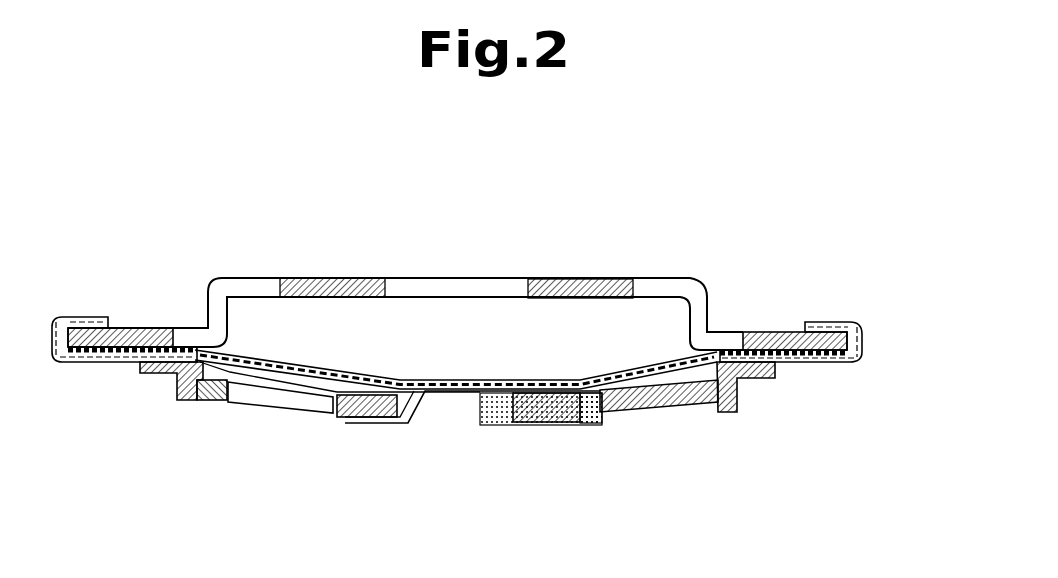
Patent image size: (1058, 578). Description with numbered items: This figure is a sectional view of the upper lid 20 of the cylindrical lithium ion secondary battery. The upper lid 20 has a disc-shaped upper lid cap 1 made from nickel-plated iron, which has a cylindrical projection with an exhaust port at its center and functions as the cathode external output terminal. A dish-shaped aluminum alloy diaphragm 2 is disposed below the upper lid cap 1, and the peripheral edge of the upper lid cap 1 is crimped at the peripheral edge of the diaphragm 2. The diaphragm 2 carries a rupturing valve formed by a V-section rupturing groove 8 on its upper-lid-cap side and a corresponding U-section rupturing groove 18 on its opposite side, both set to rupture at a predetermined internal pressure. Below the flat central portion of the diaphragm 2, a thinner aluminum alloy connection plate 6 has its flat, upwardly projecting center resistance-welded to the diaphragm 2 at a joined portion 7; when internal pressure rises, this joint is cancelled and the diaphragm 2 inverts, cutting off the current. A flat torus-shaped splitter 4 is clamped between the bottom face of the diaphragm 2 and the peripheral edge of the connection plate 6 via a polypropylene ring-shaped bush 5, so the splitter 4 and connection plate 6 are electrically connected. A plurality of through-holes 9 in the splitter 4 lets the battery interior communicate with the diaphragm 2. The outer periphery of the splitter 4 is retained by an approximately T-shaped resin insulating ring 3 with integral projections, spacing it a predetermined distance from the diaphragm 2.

The upper lid 20 is at (453, 252).
The upper lid cap 1 is at (760, 331).
The diaphragm 2 is at (860, 325).
The rupturing groove 8 is at (578, 377).
The insulating ring 3 is at (721, 414).
The through-holes 9 is at (224, 400).
The splitter 4 is at (333, 413).
The joined portion 7 is at (450, 393).
The ring-shaped bush 5 is at (515, 420).
The connection plate 6 is at (558, 427).
The rupturing groove 18 is at (600, 412).